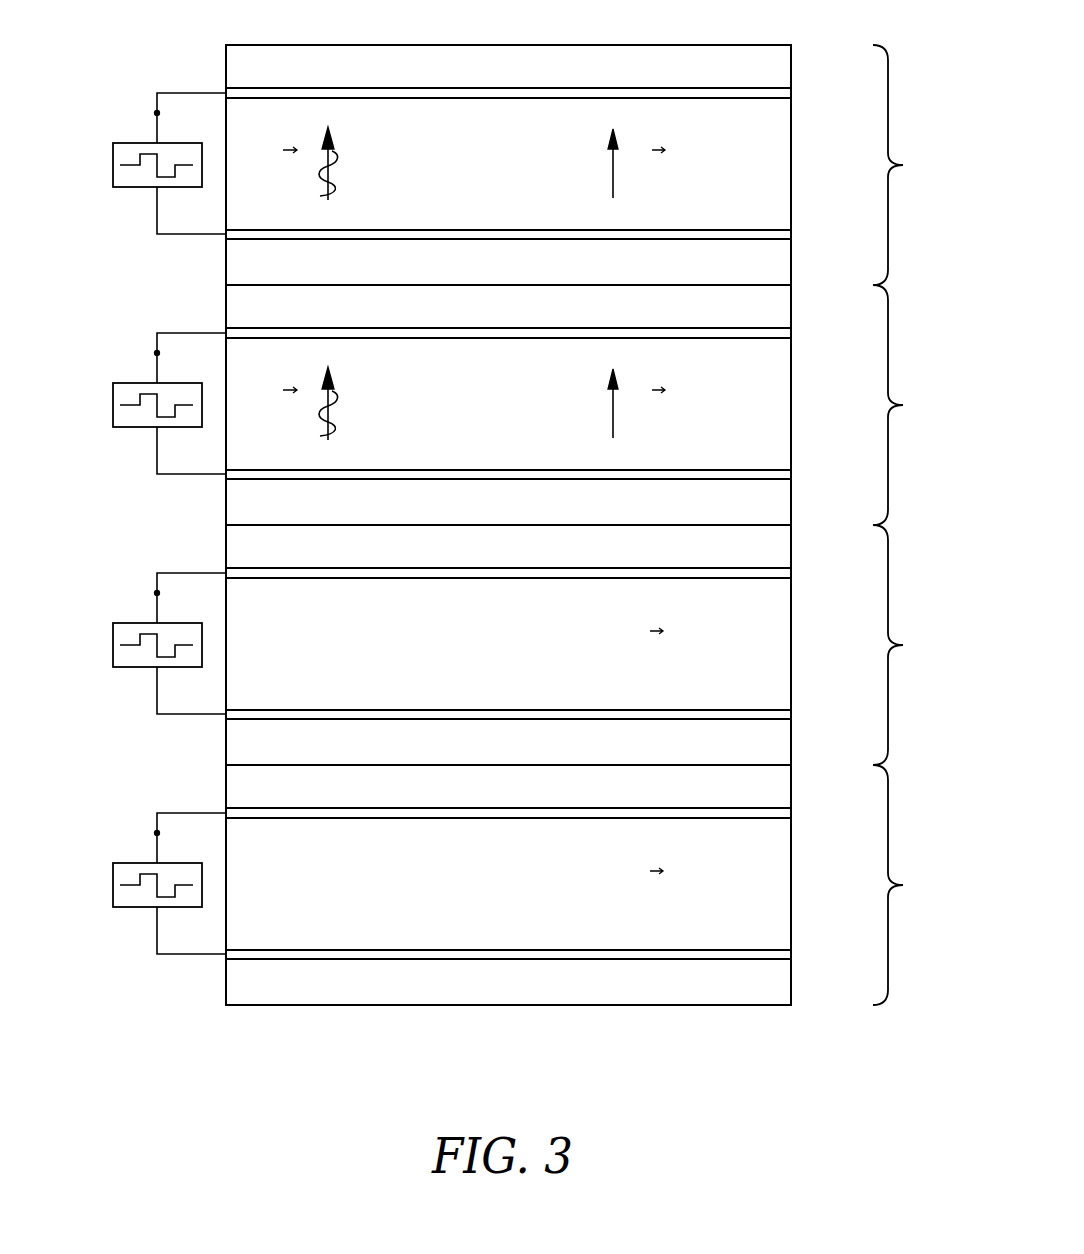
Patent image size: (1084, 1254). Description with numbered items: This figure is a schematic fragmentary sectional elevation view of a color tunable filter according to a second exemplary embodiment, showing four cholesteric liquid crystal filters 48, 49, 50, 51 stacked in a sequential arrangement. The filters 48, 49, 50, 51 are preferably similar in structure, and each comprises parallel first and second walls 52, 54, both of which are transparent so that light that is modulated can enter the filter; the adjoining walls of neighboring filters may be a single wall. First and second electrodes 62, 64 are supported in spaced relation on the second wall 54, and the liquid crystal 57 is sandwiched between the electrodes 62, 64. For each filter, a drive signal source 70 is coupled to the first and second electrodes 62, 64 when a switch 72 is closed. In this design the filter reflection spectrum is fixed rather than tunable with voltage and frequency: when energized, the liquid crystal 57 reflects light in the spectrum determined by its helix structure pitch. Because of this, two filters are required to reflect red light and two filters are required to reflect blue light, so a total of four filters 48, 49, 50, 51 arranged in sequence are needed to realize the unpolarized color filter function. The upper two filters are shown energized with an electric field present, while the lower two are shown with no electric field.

The first cholesteric liquid crystal filter 48 is at (903, 165).
The second cholesteric liquid crystal filter 49 is at (903, 405).
The third cholesteric liquid crystal filter 50 is at (903, 645).
The fourth cholesteric liquid crystal filter 51 is at (903, 885).
The first wall 52 is at (792, 67).
The second wall 54 is at (792, 263).
The liquid crystal 57 is at (792, 165).
The first electrode 62 is at (792, 95).
The second electrode 64 is at (792, 238).
The drive signal source 70 is at (113, 165).
The switch 72 is at (157, 113).